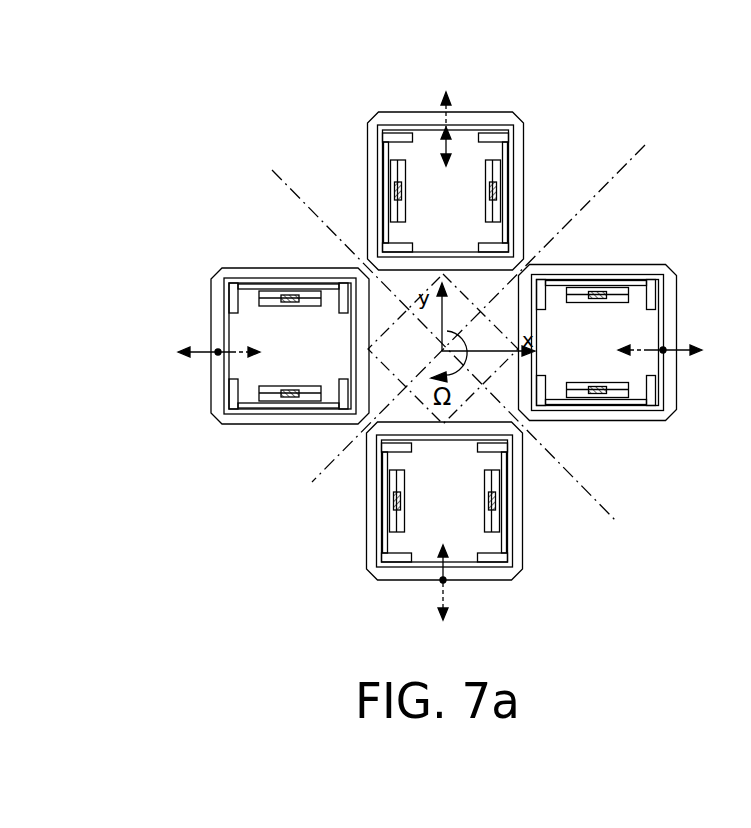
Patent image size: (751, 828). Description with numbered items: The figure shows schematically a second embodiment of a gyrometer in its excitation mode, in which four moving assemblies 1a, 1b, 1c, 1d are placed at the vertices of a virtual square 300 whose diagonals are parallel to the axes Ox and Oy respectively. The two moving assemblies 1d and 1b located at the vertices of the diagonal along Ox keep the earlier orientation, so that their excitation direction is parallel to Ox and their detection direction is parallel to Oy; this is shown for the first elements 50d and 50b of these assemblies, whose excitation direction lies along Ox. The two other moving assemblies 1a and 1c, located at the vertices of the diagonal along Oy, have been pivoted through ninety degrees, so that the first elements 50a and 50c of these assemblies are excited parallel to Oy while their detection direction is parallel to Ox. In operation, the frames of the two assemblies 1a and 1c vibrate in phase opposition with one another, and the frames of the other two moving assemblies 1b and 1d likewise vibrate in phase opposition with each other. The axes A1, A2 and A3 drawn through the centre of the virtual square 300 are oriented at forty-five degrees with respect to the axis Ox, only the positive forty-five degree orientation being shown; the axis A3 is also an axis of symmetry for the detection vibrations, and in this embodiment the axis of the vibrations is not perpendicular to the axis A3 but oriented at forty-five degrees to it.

The moving assembly 1a is at (418, 148).
The moving assembly 1b is at (635, 326).
The moving assembly 1c is at (490, 525).
The moving assembly 1d is at (253, 382).
The first element 50a is at (415, 165).
The first element 50b is at (598, 343).
The first element 50c is at (481, 525).
The first element 50d is at (222, 325).
The virtual square 300 is at (398, 308).
The axis A1 is at (626, 166).
The axis A2 is at (578, 487).
The axis A3 is at (478, 281).